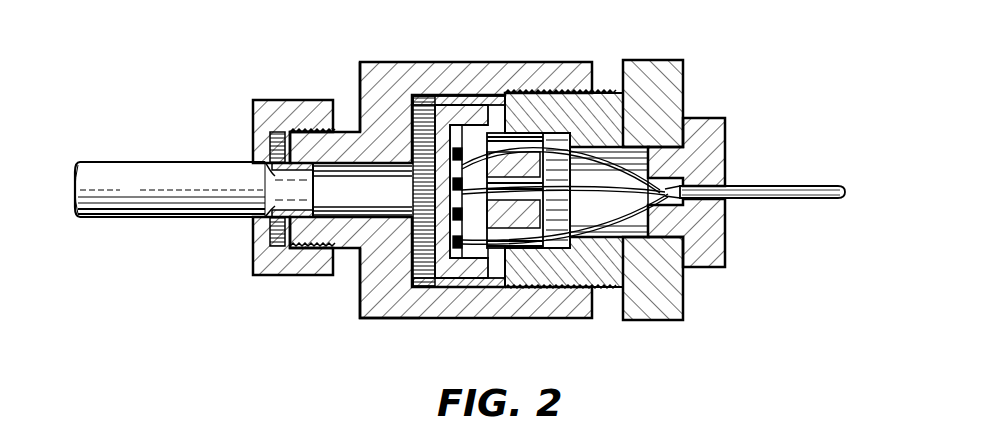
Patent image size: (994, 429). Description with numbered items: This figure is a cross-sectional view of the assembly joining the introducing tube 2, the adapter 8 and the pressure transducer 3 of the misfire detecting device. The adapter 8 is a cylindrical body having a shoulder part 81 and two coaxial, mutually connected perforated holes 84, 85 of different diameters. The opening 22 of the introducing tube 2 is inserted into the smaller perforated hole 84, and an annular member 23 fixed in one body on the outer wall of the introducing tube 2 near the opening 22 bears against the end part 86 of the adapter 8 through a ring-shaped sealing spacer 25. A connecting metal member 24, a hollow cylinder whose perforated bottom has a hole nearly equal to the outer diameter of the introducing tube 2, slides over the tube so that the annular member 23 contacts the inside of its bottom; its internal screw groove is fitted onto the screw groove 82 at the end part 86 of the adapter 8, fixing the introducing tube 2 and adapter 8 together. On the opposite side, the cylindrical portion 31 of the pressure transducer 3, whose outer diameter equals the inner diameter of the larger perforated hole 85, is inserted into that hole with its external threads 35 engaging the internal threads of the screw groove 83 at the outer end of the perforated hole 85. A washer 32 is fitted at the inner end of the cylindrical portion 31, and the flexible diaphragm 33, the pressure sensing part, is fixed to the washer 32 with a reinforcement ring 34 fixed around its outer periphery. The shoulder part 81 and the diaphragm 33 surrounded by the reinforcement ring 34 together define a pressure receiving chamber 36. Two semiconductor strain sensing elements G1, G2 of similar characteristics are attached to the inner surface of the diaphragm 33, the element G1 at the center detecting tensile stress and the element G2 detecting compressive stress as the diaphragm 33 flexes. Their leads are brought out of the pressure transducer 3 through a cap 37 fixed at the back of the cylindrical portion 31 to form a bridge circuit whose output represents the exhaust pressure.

The introducing tube 2 is at (122, 178).
The pressure transducer 3 is at (655, 60).
The adapter 8 is at (388, 58).
The opening 22 is at (290, 207).
The annular member 23 is at (272, 232).
The connecting metal member 24 is at (272, 118).
The sealing spacer 25 is at (270, 148).
The cylindrical portion 31 is at (614, 290).
The washer 32 is at (490, 292).
The flexible diaphragm 33 is at (438, 292).
The reinforcement ring 34 is at (476, 128).
The external threads 35 is at (548, 90).
The pressure receiving chamber 36 is at (426, 260).
The cap 37 is at (727, 243).
The shoulder part 81 is at (366, 298).
The screw groove 82 is at (282, 276).
The screw groove 83 is at (556, 296).
The perforated hole 84 is at (378, 97).
The perforated hole 85 is at (418, 98).
The end part 86 is at (318, 148).
The semiconductor strain sensing element G1 is at (430, 226).
The semiconductor strain sensing element G2 is at (458, 290).